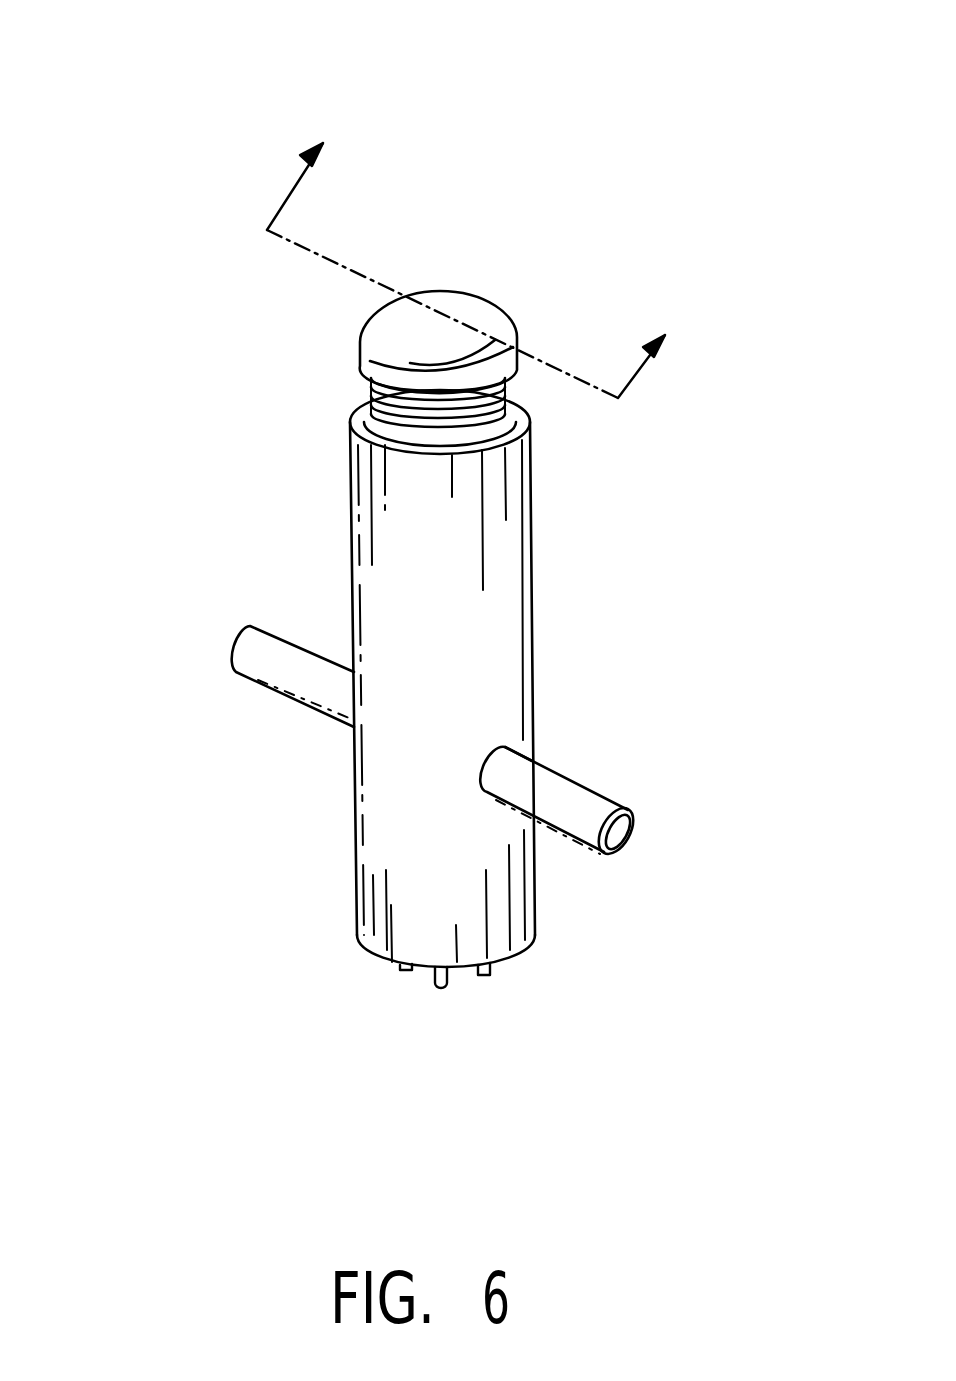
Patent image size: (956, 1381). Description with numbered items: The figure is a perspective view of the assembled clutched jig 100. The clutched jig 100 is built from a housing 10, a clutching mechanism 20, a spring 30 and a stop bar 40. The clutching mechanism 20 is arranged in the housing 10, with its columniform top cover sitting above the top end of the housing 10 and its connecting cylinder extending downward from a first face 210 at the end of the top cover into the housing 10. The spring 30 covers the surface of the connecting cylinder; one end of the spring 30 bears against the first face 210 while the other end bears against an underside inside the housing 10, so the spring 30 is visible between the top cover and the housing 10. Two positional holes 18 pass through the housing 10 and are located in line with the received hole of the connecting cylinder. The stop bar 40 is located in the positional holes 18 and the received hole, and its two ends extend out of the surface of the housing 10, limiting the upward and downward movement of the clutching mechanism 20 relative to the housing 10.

The clutched jig 100 is at (123, 42).
The housing 10 is at (535, 632).
The positional holes 18 is at (506, 748).
The clutching mechanism 20 is at (355, 322).
The first face 210 is at (368, 372).
The spring 30 is at (517, 398).
The stop bar 40 is at (632, 800).